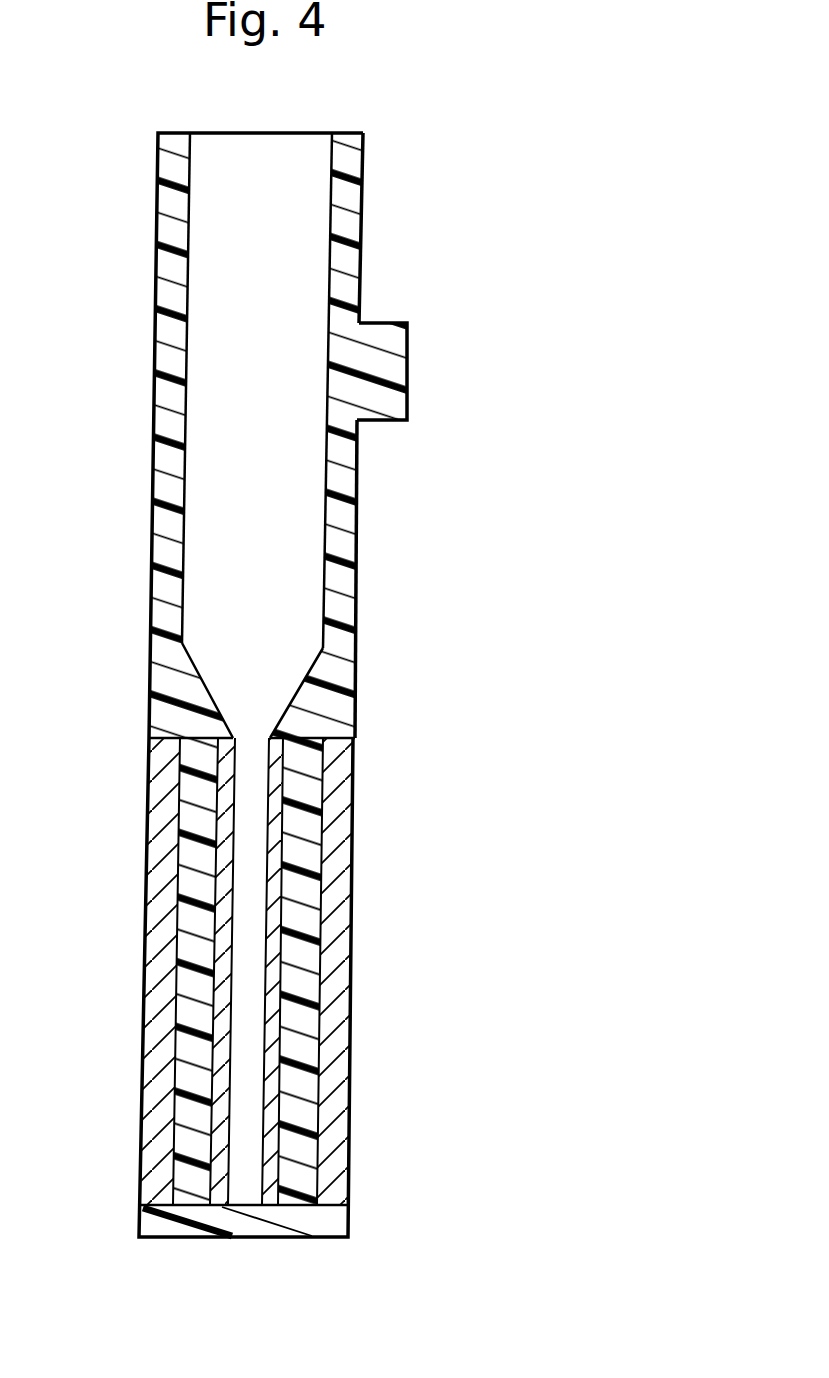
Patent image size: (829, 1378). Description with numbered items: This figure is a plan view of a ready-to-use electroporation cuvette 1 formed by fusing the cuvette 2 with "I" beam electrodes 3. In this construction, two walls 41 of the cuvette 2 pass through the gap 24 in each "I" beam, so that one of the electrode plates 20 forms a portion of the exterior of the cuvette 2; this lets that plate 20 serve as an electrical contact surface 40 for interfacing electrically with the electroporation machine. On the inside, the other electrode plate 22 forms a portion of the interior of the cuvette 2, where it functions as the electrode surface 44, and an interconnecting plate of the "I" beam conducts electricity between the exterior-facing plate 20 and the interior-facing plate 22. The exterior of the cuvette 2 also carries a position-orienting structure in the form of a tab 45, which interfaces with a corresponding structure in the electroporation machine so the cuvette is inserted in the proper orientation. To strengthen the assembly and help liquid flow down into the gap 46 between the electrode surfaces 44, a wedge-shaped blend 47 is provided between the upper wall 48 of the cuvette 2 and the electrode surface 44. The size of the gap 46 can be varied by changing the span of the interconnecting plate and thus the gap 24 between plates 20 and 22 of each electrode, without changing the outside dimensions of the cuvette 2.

The electroporation cuvette 1 is at (418, 580).
The cuvette 2 is at (353, 163).
The I beam electrodes 3 is at (378, 790).
The electrode plate 20 is at (155, 875).
The electrode plate 22 is at (220, 1178).
The gap 24 is at (188, 1113).
The electrical contact surface 40 is at (148, 773).
The walls 41 is at (190, 958).
The electrode surface 44 is at (228, 1157).
The tab 45 is at (407, 373).
The gap 46 is at (252, 747).
The wedge-shaped blend 47 is at (170, 713).
The upper wall 48 is at (152, 415).